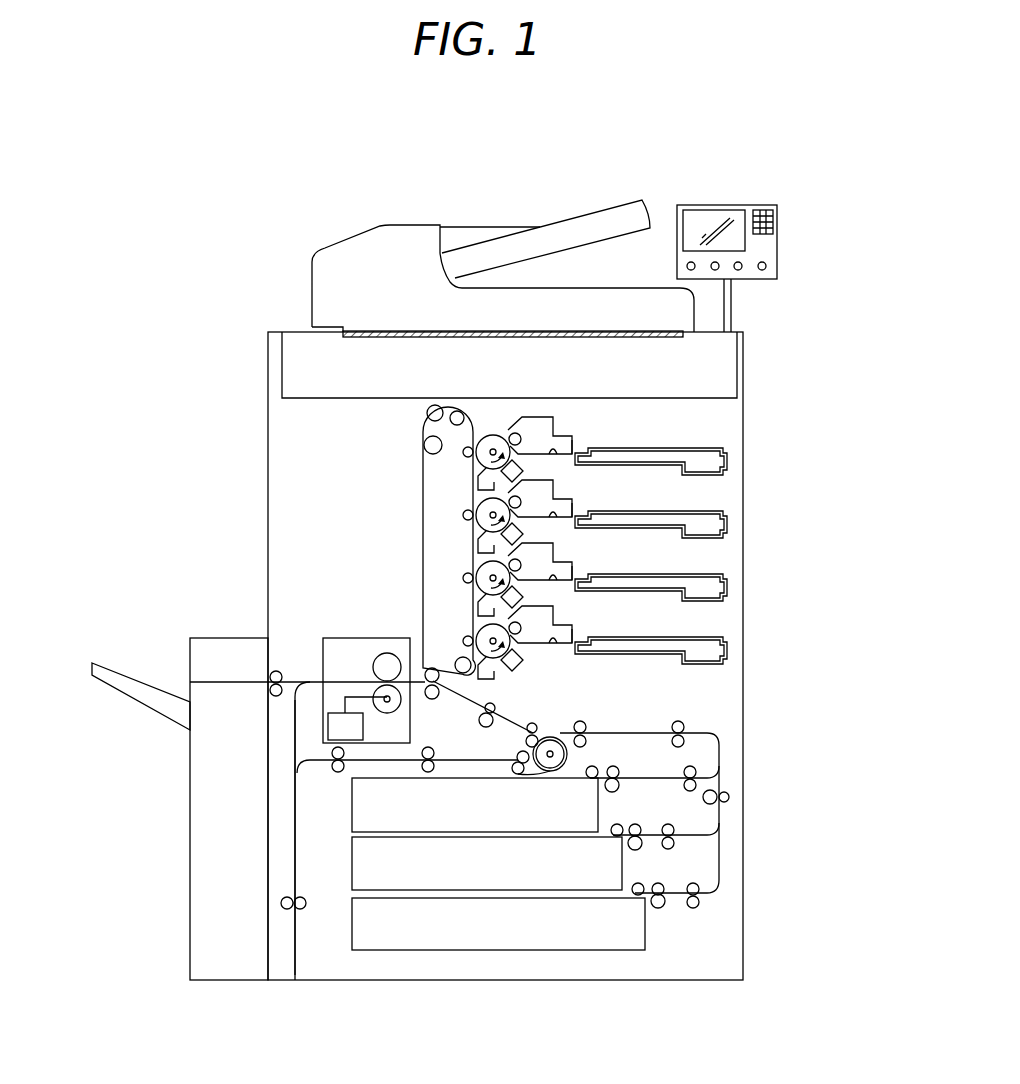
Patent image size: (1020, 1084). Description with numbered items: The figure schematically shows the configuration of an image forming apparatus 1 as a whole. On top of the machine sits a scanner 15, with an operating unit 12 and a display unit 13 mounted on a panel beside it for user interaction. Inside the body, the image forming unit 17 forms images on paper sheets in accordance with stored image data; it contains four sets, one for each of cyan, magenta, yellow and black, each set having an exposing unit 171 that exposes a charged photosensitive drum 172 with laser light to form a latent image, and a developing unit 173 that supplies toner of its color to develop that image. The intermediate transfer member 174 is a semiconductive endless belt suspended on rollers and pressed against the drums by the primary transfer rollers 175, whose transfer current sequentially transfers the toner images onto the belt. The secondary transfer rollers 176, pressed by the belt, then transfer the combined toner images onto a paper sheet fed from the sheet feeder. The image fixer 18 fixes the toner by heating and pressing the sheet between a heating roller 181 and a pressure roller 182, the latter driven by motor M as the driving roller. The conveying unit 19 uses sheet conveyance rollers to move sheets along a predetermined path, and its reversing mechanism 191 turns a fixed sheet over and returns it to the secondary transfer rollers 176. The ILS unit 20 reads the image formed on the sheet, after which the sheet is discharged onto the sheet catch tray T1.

The image forming apparatus 1 is at (657, 98).
The operating unit 12 is at (779, 232).
The display unit 13 is at (697, 216).
The scanner 15 is at (295, 334).
The image forming unit 17 is at (296, 461).
The exposing unit 171 is at (727, 460).
The photosensitive drum 172 is at (463, 455).
The developing unit 173 is at (575, 517).
The intermediate transfer member 174 is at (421, 475).
The primary transfer roller 175 is at (460, 657).
The secondary transfer roller 176 is at (434, 695).
The image fixer 18 is at (333, 637).
The heating roller 181 is at (380, 660).
The pressure roller 182 is at (378, 692).
The conveying unit 19 is at (728, 722).
The reversing mechanism 191 is at (307, 800).
The ILS unit 20 is at (220, 654).
The sheet catch tray T1 is at (122, 686).